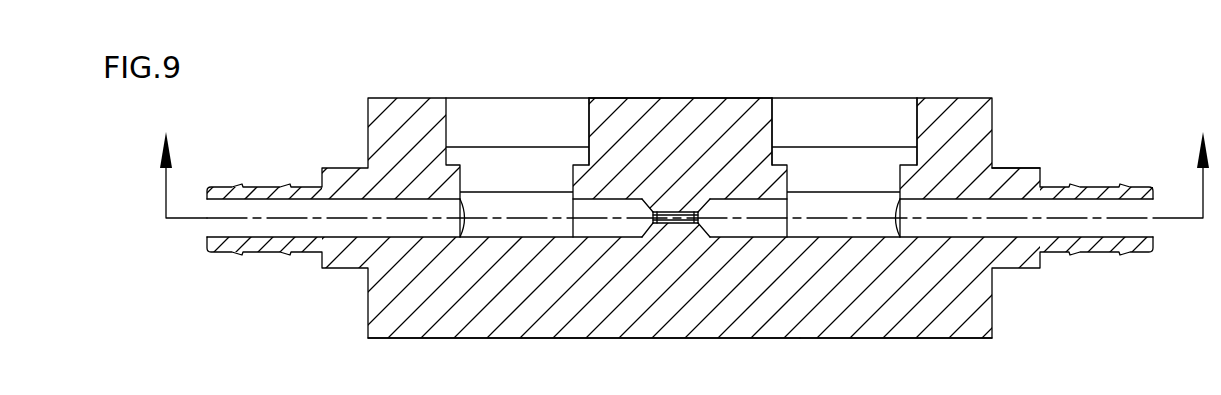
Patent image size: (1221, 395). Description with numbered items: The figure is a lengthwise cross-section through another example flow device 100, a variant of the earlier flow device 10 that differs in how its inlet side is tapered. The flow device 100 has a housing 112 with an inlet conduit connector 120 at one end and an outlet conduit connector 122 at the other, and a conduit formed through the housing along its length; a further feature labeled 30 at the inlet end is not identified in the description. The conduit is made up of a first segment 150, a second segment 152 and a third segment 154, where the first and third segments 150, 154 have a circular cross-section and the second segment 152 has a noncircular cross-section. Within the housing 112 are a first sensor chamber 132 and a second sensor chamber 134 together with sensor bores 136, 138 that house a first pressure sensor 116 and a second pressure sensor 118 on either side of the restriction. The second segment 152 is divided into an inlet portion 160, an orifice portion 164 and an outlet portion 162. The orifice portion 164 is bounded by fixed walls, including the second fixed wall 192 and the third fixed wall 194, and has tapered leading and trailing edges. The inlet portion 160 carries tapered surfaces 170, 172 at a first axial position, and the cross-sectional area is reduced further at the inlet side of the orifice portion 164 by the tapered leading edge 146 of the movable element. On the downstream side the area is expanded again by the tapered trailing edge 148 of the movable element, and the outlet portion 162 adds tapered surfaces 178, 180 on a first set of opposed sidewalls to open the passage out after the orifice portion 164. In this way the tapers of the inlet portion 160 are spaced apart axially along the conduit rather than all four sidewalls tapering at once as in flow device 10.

The flow device 100 is at (1071, 103).
The housing 112 is at (985, 92).
The outlet conduit connector 122 is at (347, 168).
The inlet conduit connector 120 is at (1028, 167).
The outlet port region 30 is at (1004, 188).
The flow device 10 is at (687, 160).
The second pressure sensor 118 is at (507, 162).
The sensor bore 138 is at (590, 123).
The first pressure sensor 116 is at (843, 157).
The sensor bore 136 is at (917, 120).
The second sensor chamber 134 is at (523, 228).
The first sensor chamber 132 is at (848, 228).
The inlet portion 160 is at (615, 172).
The orifice portion 164 is at (687, 162).
The outlet portion 162 is at (751, 160).
The tapered surface 170 is at (643, 199).
The second fixed wall 192 is at (655, 211).
The tapered trailing edge 148 is at (696, 211).
The tapered surface 178 is at (704, 204).
The tapered surface 172 is at (652, 225).
The tapered leading edge 146 is at (657, 224).
The third fixed wall 194 is at (681, 224).
The tapered surface 180 is at (703, 233).
The first segment 150 is at (413, 262).
The second segment 152 is at (682, 252).
The third segment 154 is at (937, 252).